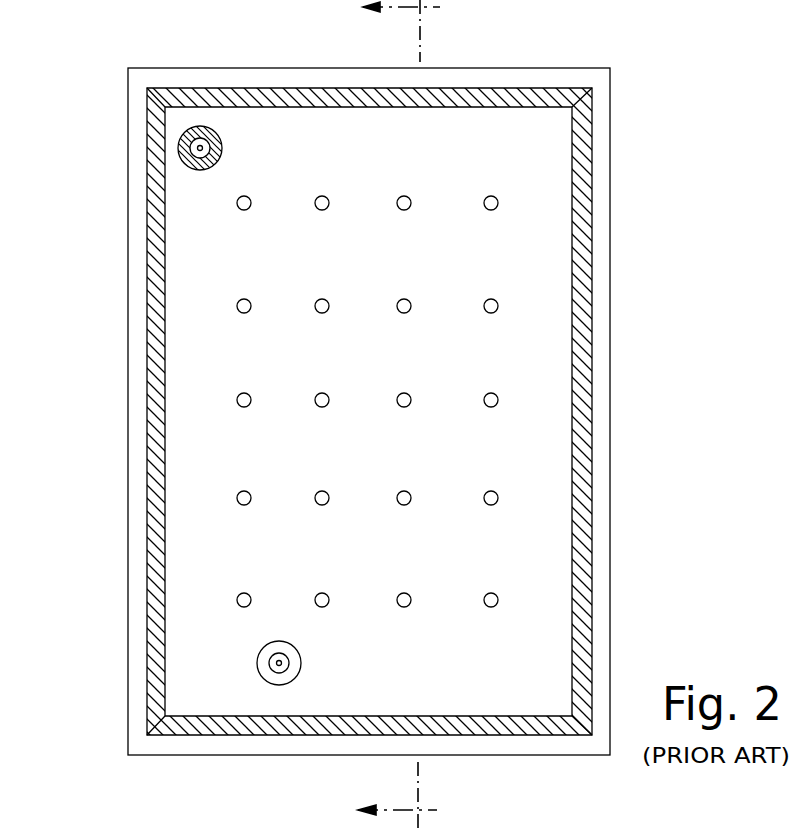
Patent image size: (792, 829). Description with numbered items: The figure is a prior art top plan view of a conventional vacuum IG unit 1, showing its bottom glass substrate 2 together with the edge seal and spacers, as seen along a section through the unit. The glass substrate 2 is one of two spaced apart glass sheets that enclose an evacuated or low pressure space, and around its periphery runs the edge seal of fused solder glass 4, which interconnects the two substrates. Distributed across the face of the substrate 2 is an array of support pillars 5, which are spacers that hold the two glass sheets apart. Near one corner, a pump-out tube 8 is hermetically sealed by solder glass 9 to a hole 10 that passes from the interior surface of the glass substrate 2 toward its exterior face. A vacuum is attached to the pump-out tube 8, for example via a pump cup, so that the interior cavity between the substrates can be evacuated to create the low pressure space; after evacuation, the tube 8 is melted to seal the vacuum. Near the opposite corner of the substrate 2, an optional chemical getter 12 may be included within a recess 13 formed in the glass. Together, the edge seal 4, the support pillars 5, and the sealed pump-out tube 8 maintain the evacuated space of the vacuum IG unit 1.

The vacuum IG unit 1 is at (117, 627).
The glass substrate 2 is at (362, 78).
The edge seal of fused solder glass 4 is at (272, 97).
The support pillars 5 is at (498, 306).
The pump-out tube 8 is at (196, 147).
The solder glass 9 is at (200, 171).
The hole 10 is at (197, 149).
The chemical getter 12 is at (270, 669).
The recess 13 is at (291, 662).